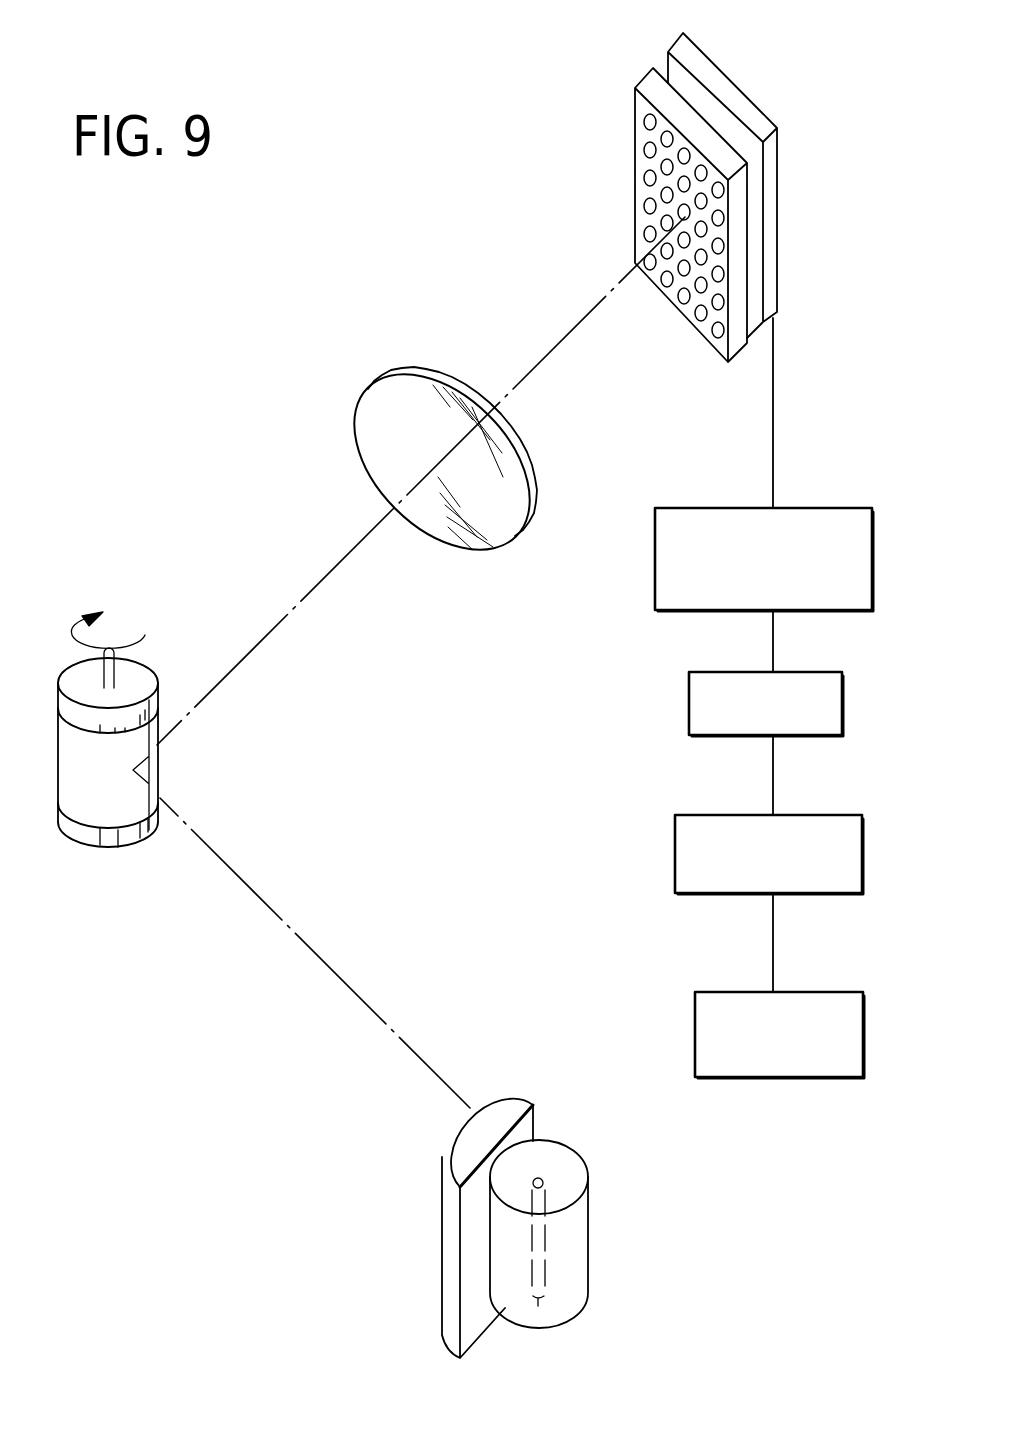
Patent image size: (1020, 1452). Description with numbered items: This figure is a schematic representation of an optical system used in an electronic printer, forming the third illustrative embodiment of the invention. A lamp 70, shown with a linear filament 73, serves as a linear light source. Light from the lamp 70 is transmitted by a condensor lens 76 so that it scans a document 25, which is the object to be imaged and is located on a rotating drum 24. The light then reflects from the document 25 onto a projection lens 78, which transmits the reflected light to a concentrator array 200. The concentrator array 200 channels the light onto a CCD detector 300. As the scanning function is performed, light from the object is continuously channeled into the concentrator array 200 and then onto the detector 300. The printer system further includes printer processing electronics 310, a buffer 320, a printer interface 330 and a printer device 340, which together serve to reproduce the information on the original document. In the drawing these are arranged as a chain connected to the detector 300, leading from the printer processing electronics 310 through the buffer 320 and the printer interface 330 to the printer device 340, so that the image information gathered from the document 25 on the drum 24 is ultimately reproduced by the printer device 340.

The rotating drum 24 is at (104, 758).
The document 25 is at (72, 790).
The lamp 70 is at (577, 1234).
The linear filament 73 is at (546, 1258).
The condensor lens 76 is at (453, 1155).
The projection lens 78 is at (382, 405).
The concentrator array 200 is at (635, 140).
The CCD detector 300 is at (713, 80).
The printer processing electronics 310 is at (655, 586).
The buffer 320 is at (689, 700).
The printer interface 330 is at (675, 852).
The printer device 340 is at (695, 1012).